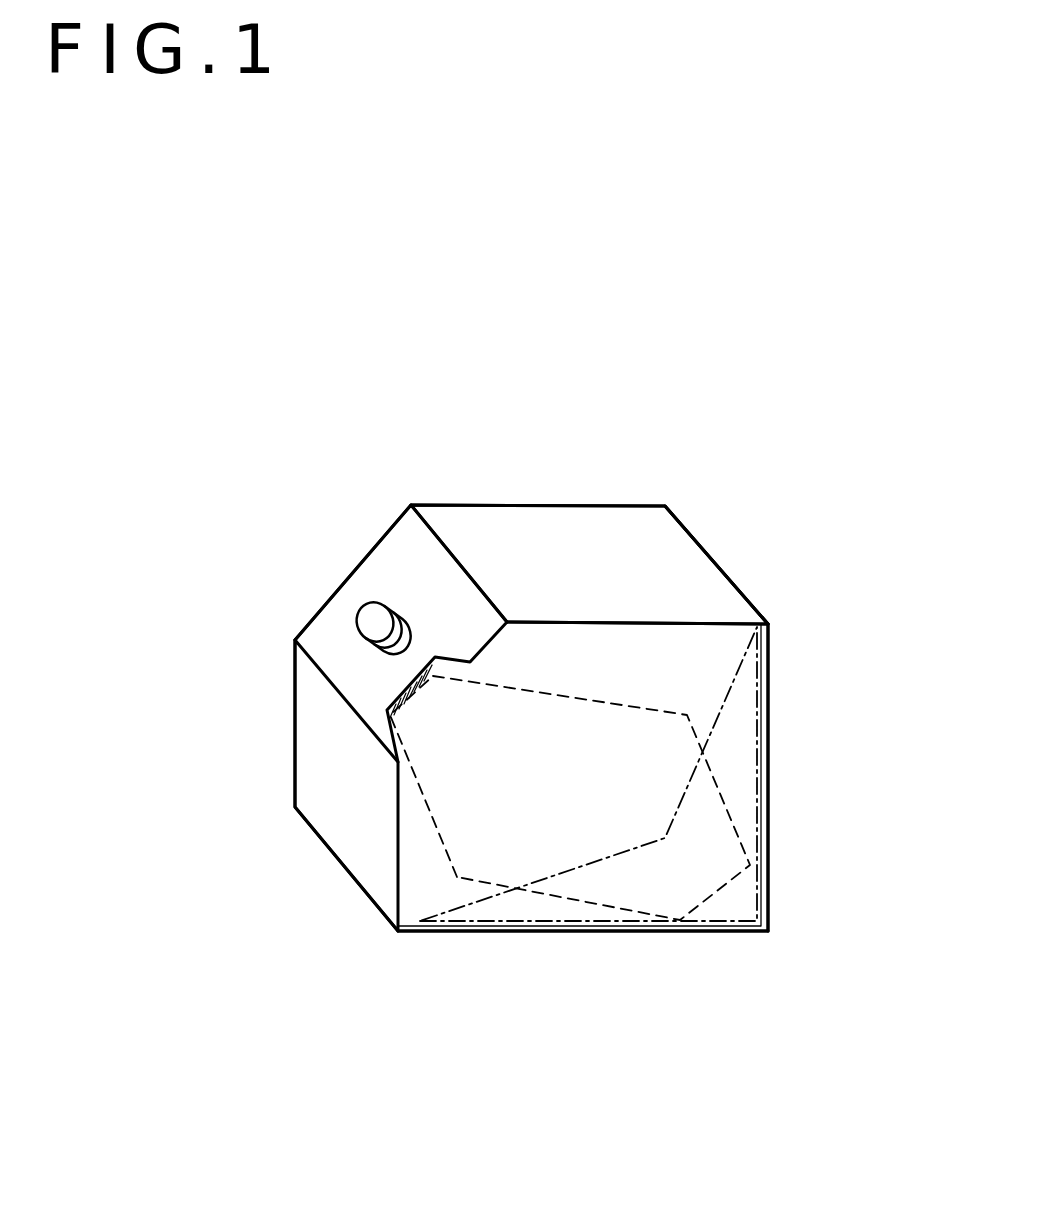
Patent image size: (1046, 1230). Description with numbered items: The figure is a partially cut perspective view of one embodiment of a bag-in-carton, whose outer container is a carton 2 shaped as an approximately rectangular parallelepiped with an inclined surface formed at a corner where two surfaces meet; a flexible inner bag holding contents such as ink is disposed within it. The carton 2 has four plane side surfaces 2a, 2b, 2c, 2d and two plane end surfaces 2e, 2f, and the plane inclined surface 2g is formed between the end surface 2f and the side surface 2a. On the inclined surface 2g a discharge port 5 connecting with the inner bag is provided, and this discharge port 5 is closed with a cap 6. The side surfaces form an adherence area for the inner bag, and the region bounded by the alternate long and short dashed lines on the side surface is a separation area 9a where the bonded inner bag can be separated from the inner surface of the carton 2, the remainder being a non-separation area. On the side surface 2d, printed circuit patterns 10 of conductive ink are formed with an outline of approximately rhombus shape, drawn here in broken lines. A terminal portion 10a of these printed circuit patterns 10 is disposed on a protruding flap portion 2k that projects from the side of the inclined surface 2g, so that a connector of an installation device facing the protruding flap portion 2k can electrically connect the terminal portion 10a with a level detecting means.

The carton 2 is at (707, 550).
The side surface 2a is at (333, 833).
The side surface 2b is at (592, 505).
The side surface 2c is at (768, 678).
The side surface 2d is at (722, 643).
The end surface 2e is at (510, 933).
The end surface 2f is at (633, 533).
The inclined surface 2g is at (403, 577).
The protruding flap portion 2k is at (397, 703).
The discharge port 5 is at (413, 632).
The cap 6 is at (362, 627).
The separation area 9a is at (763, 778).
The printed circuit patterns 10 is at (587, 697).
The terminal portion 10a is at (388, 716).